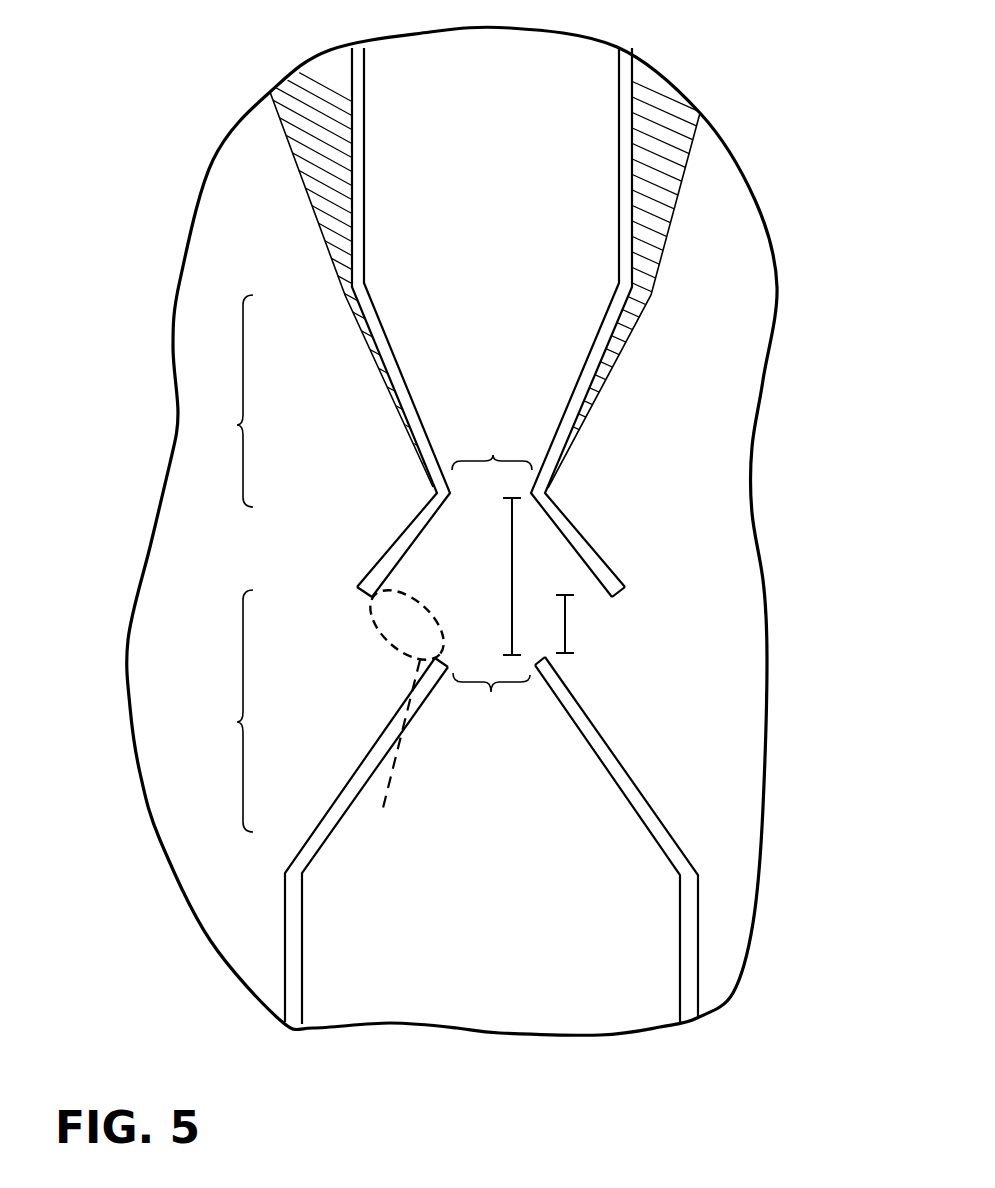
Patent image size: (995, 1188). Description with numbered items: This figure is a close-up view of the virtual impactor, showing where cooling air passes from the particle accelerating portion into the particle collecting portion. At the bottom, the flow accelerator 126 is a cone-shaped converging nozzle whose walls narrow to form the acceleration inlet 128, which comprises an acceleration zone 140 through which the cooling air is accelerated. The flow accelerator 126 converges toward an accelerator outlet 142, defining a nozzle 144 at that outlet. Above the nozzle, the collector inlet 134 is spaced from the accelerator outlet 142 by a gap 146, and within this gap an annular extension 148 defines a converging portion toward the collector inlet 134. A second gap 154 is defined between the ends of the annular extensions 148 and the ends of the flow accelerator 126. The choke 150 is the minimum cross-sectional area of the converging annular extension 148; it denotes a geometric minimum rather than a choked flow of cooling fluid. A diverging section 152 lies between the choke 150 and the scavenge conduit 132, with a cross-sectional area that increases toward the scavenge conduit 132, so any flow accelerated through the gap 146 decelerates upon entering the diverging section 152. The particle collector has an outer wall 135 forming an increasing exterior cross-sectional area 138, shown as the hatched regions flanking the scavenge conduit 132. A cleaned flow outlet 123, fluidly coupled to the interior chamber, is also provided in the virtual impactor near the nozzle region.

The cleaned flow outlet 123 is at (390, 747).
The flow accelerator 126 is at (359, 767).
The acceleration inlet 128 is at (477, 783).
The scavenge conduit 132 is at (458, 138).
The collector inlet 134 is at (388, 575).
The outer wall 135 is at (677, 243).
The increasing exterior cross-sectional area 138 is at (293, 192).
The acceleration zone 140 is at (222, 711).
The accelerator outlet 142 is at (470, 658).
The nozzle 144 is at (491, 697).
The gap 146 is at (513, 557).
The annular extension 148 is at (392, 548).
The choke 150 is at (492, 447).
The diverging section 152 is at (222, 401).
The second gap 154 is at (567, 625).